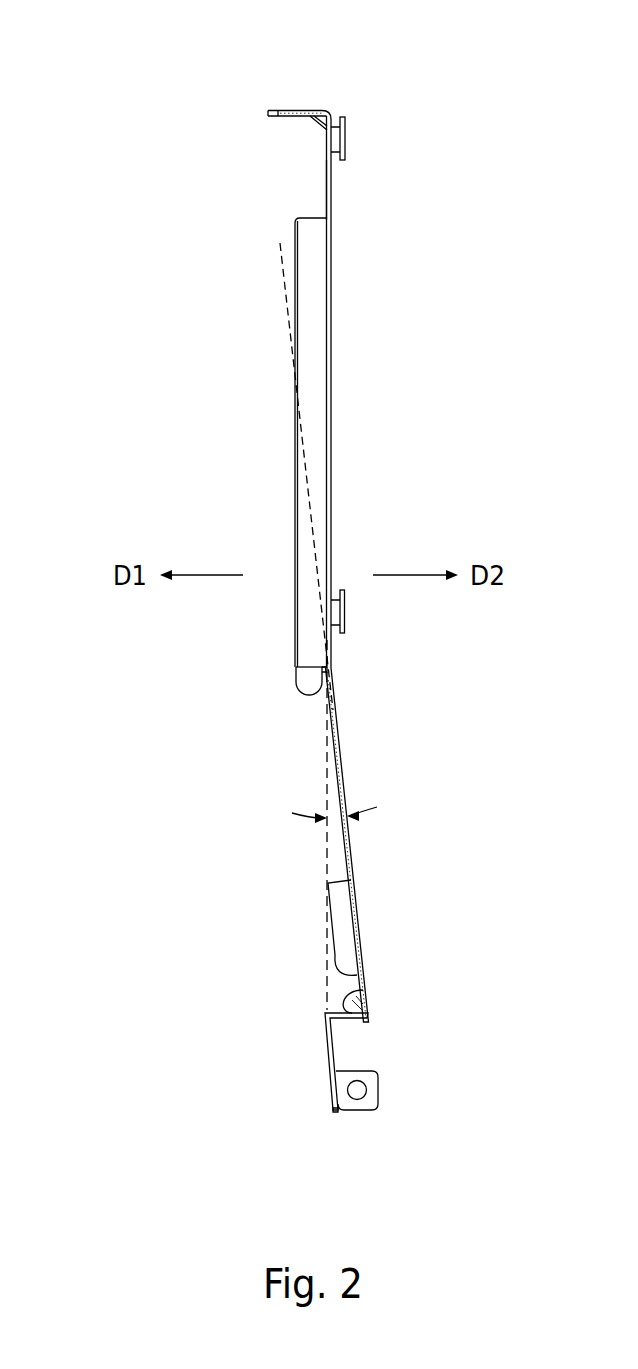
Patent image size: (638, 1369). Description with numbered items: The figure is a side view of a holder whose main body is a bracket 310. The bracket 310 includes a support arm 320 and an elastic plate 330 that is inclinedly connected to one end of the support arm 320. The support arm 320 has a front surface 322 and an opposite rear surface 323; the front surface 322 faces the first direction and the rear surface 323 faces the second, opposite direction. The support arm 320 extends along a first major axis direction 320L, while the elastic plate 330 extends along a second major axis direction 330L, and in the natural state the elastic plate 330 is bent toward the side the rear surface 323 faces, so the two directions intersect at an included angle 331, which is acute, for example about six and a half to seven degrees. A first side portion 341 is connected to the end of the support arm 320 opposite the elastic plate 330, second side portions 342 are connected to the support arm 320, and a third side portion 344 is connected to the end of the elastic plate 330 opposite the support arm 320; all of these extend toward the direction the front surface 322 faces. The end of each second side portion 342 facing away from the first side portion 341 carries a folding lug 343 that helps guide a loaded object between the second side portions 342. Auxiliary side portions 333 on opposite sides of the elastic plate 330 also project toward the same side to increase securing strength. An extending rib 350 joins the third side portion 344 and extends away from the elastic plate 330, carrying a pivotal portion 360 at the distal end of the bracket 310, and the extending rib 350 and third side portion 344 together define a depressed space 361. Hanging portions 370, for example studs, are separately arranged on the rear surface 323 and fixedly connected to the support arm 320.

The bracket 310 is at (422, 645).
The support arm 320 is at (340, 399).
The first major axis direction 320L is at (326, 988).
The front surface 322 is at (326, 188).
The rear surface 323 is at (330, 176).
The elastic plate 330 is at (345, 769).
The second major axis direction 330L is at (310, 500).
The included angle 331 is at (335, 820).
The auxiliary side portion 333 is at (342, 913).
The first side portion 341 is at (312, 110).
The second side portion 342 is at (312, 277).
The folding lug 343 is at (305, 680).
The third side portion 344 is at (354, 990).
The extending rib 350 is at (333, 1090).
The pivotal portion 360 is at (362, 1092).
The depressed space 361 is at (352, 1052).
The hanging portion 370 is at (336, 137).